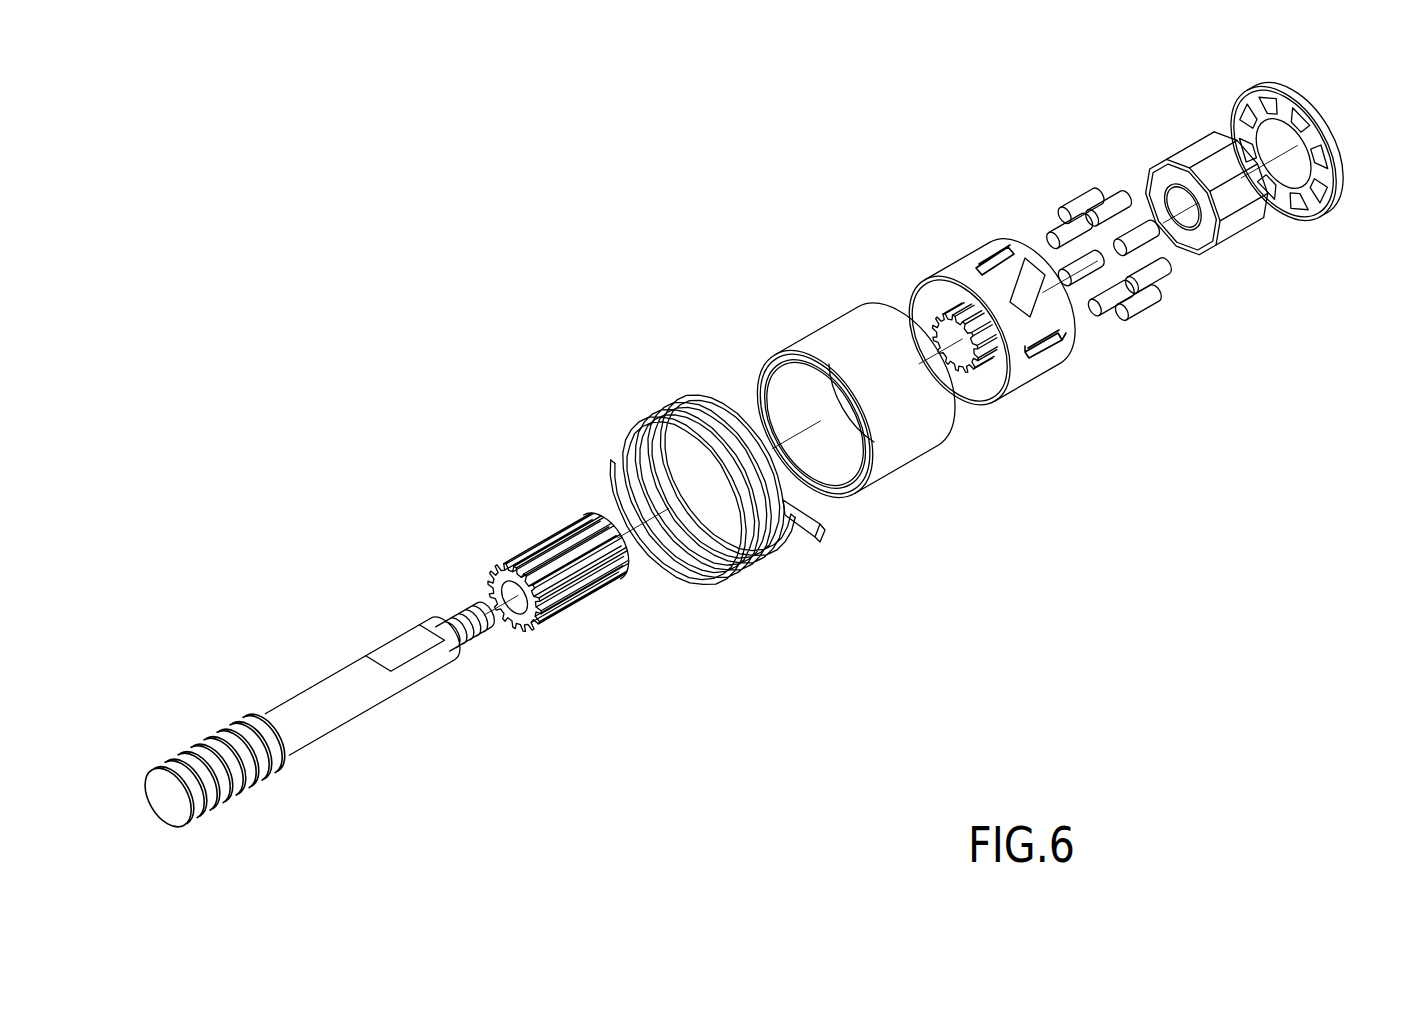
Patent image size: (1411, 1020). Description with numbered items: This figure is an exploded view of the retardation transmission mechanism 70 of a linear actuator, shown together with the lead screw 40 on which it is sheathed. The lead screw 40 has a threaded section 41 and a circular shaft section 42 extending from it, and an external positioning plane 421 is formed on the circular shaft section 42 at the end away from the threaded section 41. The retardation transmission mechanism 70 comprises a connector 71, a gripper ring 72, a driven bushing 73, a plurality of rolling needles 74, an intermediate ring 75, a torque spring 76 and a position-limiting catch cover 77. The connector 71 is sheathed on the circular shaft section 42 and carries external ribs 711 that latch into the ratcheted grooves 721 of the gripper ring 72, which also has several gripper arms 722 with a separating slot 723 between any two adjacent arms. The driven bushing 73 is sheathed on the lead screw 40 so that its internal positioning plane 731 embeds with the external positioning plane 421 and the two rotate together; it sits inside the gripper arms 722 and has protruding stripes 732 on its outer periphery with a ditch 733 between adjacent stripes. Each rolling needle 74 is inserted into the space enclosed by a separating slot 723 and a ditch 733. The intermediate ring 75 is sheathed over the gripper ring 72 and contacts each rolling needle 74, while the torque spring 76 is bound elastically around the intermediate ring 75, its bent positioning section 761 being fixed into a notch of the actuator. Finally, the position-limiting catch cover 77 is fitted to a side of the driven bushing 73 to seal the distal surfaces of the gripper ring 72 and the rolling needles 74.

The lead screw 40 is at (320, 694).
The threaded section 41 is at (245, 775).
The circular shaft section 42 is at (345, 710).
The external positioning plane 421 is at (403, 650).
The retardation transmission mechanism 70 is at (914, 396).
The connector 71 is at (576, 603).
The external ribs 711 is at (590, 600).
The gripper ring 72 is at (974, 307).
The ratcheted grooves 721 is at (940, 325).
The gripper arms 722 is at (1048, 322).
The separating slot 723 is at (1040, 297).
The driven bushing 73 is at (1232, 231).
The internal positioning plane 731 is at (1182, 235).
The protruding stripes 732 is at (1242, 205).
The ditch 733 is at (1235, 222).
The rolling needles 74 is at (1110, 200).
The intermediate ring 75 is at (825, 343).
The torque spring 76 is at (697, 500).
The positioning section 761 is at (790, 537).
The position-limiting catch cover 77 is at (1305, 110).